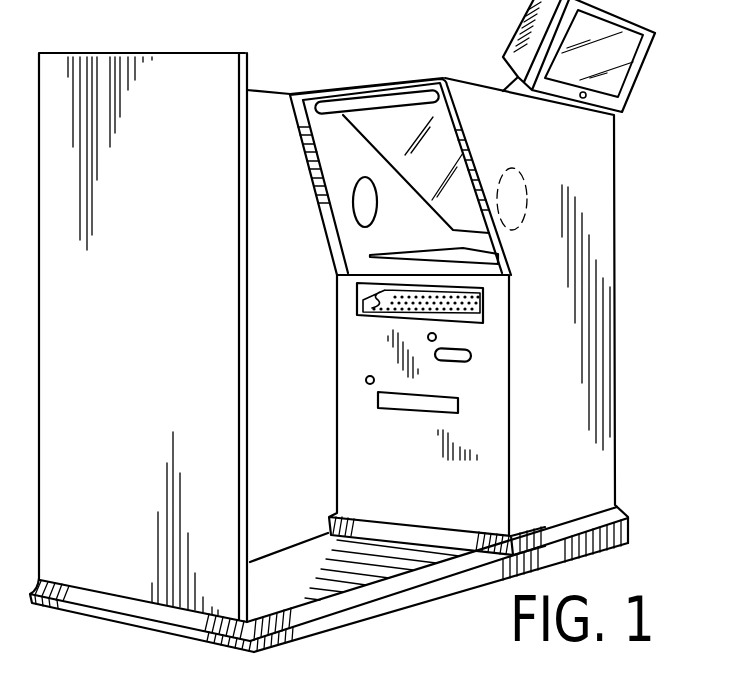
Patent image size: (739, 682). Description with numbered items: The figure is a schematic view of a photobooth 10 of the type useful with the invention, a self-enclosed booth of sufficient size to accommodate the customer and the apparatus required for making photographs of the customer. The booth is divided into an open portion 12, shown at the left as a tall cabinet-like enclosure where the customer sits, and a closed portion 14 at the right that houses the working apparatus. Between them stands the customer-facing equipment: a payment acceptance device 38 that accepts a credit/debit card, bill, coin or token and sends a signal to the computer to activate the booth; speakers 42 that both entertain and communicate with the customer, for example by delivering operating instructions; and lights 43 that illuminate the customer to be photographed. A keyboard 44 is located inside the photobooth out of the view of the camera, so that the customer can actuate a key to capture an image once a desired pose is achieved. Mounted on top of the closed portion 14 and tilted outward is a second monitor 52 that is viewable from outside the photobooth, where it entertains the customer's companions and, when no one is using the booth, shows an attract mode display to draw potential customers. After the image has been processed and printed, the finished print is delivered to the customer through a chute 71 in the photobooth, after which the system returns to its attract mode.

The photobooth 10 is at (364, 326).
The open portion 12 is at (262, 165).
The closed portion 14 is at (605, 325).
The payment acceptance device 38 is at (472, 358).
The speakers 42 is at (357, 203).
The lights 43 is at (400, 97).
The keyboard 44 is at (383, 298).
The second monitor 52 is at (635, 72).
The chute 71 is at (427, 413).